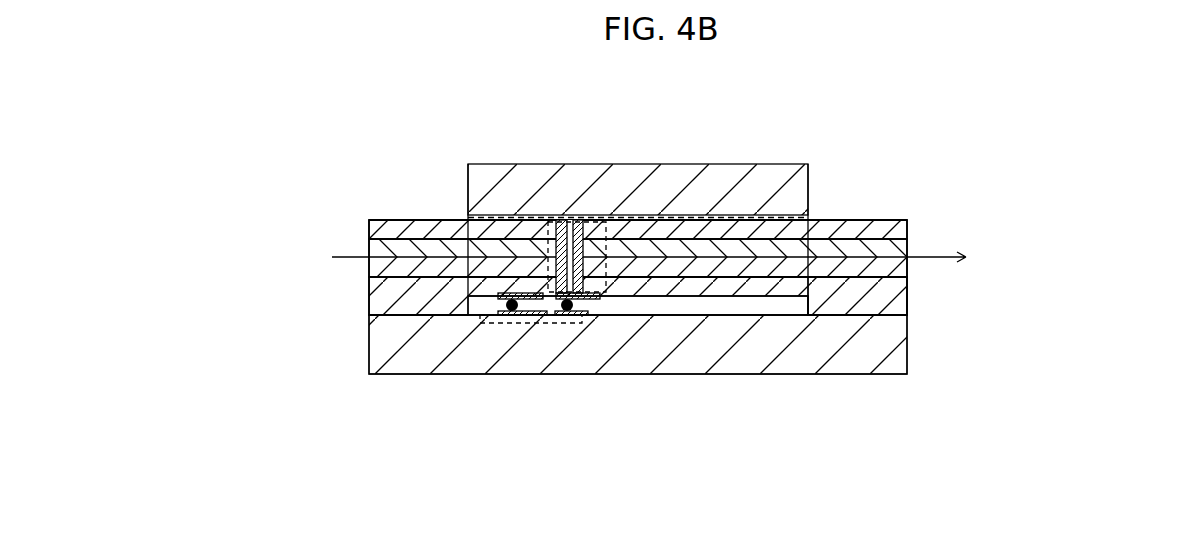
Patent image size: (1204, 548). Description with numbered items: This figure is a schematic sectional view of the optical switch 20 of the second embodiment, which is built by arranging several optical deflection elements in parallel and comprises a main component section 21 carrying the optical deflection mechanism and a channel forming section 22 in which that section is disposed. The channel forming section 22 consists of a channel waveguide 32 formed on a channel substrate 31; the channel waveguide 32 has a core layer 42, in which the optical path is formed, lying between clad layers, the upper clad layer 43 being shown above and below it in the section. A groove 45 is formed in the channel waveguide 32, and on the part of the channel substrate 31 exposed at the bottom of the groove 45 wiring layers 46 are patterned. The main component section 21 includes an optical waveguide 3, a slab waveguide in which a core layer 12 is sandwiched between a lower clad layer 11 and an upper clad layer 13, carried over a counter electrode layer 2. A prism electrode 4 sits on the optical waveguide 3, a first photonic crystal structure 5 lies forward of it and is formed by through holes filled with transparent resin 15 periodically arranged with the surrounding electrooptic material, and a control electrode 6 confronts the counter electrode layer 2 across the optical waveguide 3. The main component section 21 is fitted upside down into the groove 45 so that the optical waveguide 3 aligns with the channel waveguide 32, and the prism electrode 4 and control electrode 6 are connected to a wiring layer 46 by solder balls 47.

The optical switch 20 is at (988, 223).
The counter electrode layer 2 is at (808, 215).
The optical waveguide 3 is at (784, 57).
The lower clad layer 11 is at (702, 233).
The core layer 12 is at (732, 247).
The upper clad layer 13 is at (763, 290).
The main component section 21 is at (618, 153).
The transparent resin 15 is at (565, 215).
The first photonic crystal structure 5 is at (547, 233).
The prism electrode 4 is at (523, 300).
The wiring layer 46 is at (585, 302).
The solder ball 47 is at (503, 305).
The control electrode 6 is at (585, 318).
The groove 45 is at (807, 300).
The channel forming section 22 is at (918, 297).
The channel substrate 31 is at (895, 350).
The channel waveguide 32 is at (287, 217).
The core layer 42 is at (368, 260).
The upper clad layer 43 is at (368, 225).